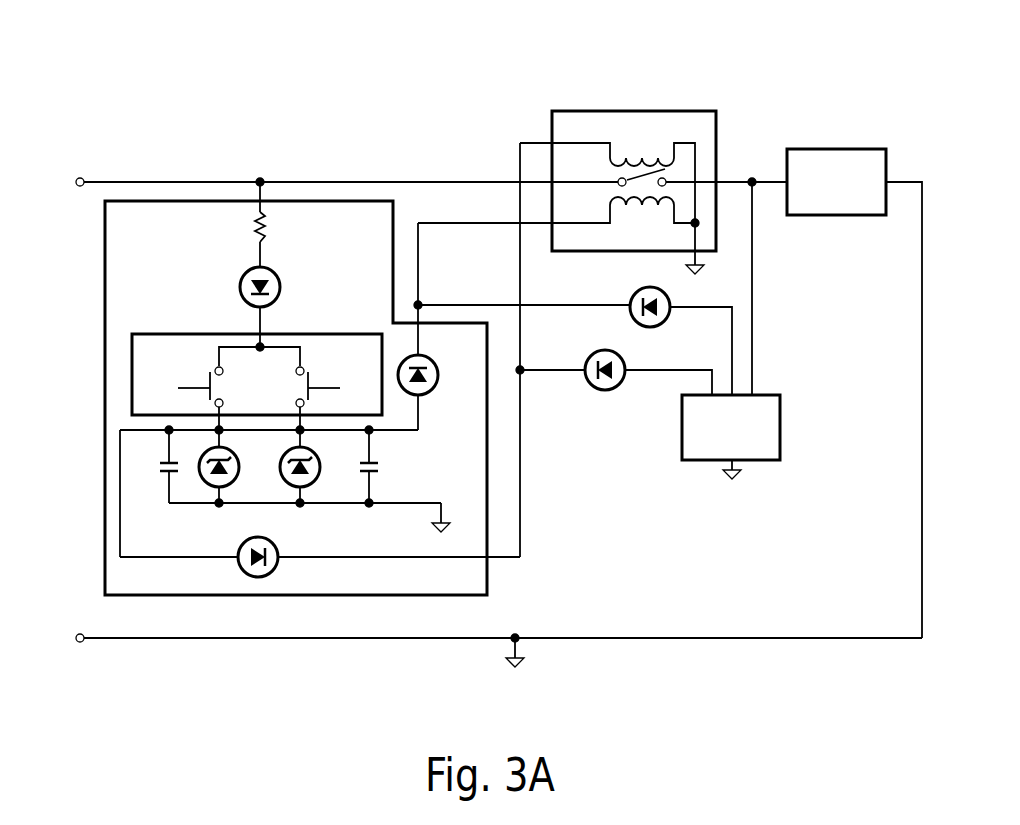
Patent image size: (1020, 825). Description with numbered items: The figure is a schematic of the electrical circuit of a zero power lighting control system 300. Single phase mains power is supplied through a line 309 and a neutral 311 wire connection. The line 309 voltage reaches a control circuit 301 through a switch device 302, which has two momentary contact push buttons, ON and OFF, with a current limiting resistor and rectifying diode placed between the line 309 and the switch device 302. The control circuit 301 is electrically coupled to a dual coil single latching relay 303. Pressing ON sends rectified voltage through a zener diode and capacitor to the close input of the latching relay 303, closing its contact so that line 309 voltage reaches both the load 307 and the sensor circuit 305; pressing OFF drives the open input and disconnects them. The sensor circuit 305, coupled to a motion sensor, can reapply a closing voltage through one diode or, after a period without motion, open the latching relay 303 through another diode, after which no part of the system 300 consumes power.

The zero power lighting control system 300 is at (178, 63).
The control circuit 301 is at (98, 586).
The switch device 302 is at (180, 332).
The latching relay 303 is at (630, 111).
The sensor circuit 305 is at (781, 427).
The load 307 is at (834, 148).
The line 309 is at (80, 177).
The neutral 311 is at (80, 643).